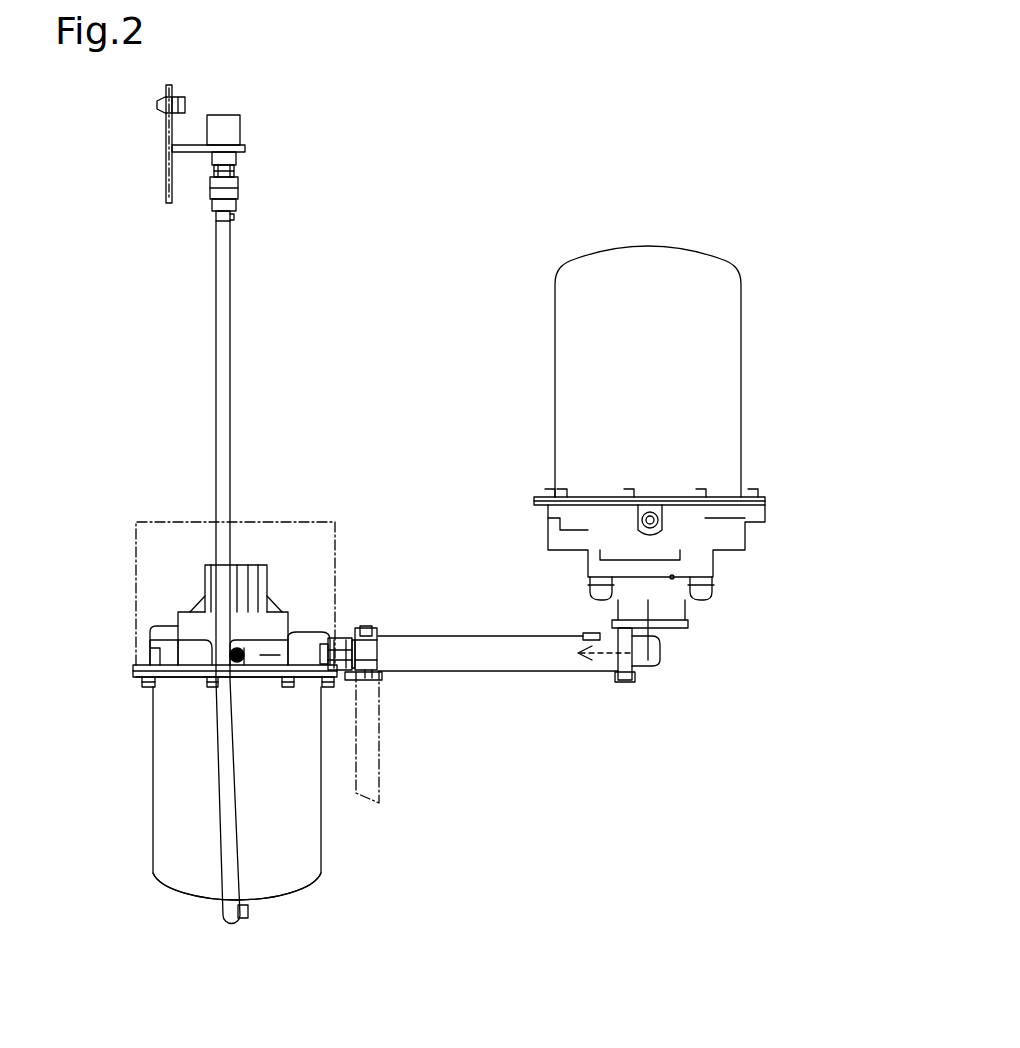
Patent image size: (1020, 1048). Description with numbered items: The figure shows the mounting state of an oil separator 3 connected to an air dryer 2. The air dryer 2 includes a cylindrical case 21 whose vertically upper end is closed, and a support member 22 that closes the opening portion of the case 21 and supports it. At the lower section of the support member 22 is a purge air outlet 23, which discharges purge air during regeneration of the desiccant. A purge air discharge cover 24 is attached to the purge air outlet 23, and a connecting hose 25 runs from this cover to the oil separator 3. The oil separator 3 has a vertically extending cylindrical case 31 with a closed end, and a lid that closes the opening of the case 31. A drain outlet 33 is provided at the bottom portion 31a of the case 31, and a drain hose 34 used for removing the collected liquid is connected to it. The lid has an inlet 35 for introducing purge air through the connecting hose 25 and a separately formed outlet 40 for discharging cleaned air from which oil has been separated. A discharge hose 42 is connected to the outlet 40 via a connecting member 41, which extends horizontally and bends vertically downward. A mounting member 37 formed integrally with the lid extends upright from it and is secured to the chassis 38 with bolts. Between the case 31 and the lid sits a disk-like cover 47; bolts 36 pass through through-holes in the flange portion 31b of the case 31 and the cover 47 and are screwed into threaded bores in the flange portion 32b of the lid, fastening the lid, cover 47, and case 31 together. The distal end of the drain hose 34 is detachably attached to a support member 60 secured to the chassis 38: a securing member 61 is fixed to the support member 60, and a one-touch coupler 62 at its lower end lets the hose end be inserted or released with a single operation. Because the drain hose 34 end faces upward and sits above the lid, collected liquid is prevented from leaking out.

The air dryer 2 is at (750, 240).
The case 21 is at (742, 378).
The support member 22 is at (766, 527).
The purge air outlet 23 is at (686, 612).
The purge air discharge cover 24 is at (662, 648).
The connecting hose 25 is at (538, 636).
The oil separator 3 is at (346, 486).
The case 31 is at (322, 850).
The bottom portion 31a is at (316, 882).
The flange portion 31b is at (138, 680).
The flange portion 32b is at (135, 655).
The drain outlet 33 is at (248, 915).
The drain hose 34 is at (231, 378).
The inlet 35 is at (336, 632).
The bolts 36 is at (150, 688).
The mounting member 37 is at (262, 600).
The chassis 38 is at (165, 170).
The outlet 40 is at (353, 654).
The connecting member 41 is at (380, 645).
The discharge hose 42 is at (380, 772).
The cover 47 is at (134, 672).
The support member 60 is at (202, 150).
The securing member 61 is at (241, 132).
The one-touch coupler 62 is at (237, 208).